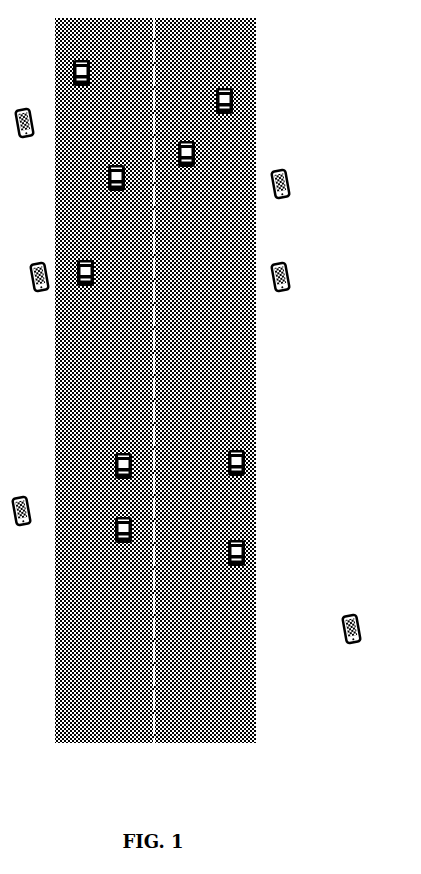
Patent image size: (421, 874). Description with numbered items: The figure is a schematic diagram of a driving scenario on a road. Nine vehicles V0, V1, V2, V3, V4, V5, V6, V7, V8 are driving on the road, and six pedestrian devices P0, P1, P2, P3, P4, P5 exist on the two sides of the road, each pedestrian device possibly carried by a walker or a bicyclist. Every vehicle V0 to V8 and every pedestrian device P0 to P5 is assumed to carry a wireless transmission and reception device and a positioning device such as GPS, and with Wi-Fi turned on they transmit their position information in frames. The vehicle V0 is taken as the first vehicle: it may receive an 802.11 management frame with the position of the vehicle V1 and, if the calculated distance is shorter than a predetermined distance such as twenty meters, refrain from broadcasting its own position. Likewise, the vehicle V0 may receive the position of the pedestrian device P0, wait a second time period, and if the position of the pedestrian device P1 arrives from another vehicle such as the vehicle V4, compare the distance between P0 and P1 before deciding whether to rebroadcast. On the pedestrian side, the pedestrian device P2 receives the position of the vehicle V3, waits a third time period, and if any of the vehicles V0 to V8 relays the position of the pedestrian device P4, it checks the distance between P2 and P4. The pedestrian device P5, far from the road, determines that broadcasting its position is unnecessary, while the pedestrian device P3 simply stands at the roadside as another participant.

The vehicle V0 is at (81, 61).
The vehicle V1 is at (223, 91).
The vehicle V2 is at (117, 166).
The vehicle V3 is at (185, 144).
The vehicle V4 is at (84, 263).
The vehicle V5 is at (123, 456).
The vehicle V6 is at (123, 521).
The vehicle V7 is at (235, 453).
The vehicle V8 is at (235, 544).
The pedestrian device P0 is at (24, 114).
The pedestrian device P1 is at (37, 266).
The pedestrian device P2 is at (281, 173).
The pedestrian device P3 is at (22, 500).
The pedestrian device P4 is at (281, 266).
The pedestrian device P5 is at (352, 618).